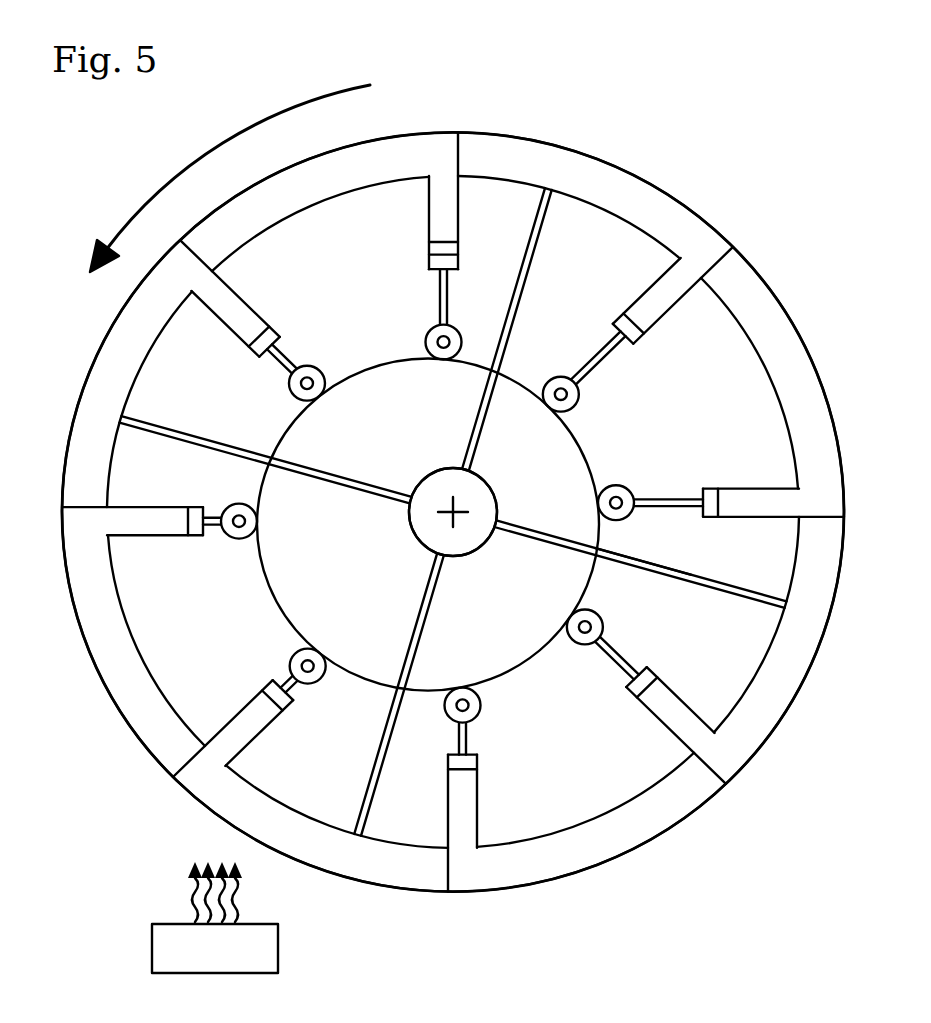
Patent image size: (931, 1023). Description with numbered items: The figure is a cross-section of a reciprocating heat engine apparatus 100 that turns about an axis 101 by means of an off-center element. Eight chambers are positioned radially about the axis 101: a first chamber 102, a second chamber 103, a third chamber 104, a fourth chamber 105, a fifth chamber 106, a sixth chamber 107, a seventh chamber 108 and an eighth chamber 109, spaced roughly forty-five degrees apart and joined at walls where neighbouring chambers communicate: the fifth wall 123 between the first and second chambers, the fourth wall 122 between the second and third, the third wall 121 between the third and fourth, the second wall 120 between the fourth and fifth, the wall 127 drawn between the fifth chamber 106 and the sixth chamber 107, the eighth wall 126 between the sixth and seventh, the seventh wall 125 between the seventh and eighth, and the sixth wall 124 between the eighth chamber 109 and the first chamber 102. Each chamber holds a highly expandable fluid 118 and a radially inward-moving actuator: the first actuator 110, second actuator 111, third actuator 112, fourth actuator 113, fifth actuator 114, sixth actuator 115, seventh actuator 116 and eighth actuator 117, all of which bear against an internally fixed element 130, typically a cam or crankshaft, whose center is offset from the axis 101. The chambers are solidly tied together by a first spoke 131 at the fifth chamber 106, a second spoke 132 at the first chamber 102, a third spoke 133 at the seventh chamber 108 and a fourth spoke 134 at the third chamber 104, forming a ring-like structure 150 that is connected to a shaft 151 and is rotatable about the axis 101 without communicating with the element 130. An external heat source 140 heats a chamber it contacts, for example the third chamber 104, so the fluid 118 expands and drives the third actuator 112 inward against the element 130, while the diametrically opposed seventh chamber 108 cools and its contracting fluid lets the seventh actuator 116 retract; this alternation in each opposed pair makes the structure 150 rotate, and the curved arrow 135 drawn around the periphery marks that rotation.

The reciprocating heat engine apparatus 100 is at (716, 133).
The axis 101 is at (462, 505).
The first chamber 102 is at (772, 644).
The second chamber 103 is at (590, 822).
The third chamber 104 is at (345, 828).
The fourth chamber 105 is at (134, 644).
The fifth chamber 106 is at (142, 362).
The sixth chamber 107 is at (333, 200).
The seventh chamber 108 is at (596, 208).
The eighth chamber 109 is at (788, 430).
The first actuator 110 is at (599, 703).
The second actuator 111 is at (505, 777).
The third actuator 112 is at (228, 687).
The fourth actuator 113 is at (172, 493).
The fifth actuator 114 is at (294, 303).
The sixth actuator 115 is at (484, 255).
The seventh actuator 116 is at (630, 384).
The eighth actuator 117 is at (653, 470).
The fluid 118 is at (290, 191).
The second wall 120 is at (72, 512).
The third wall 121 is at (196, 766).
The fourth wall 122 is at (450, 884).
The fifth wall 123 is at (730, 766).
The sixth wall 124 is at (841, 506).
The seventh wall 125 is at (721, 251).
The eighth wall 126 is at (457, 152).
The gap 127 is at (198, 262).
The fixed element 130 is at (268, 588).
The first spoke 131 is at (190, 432).
The second spoke 132 is at (684, 569).
The third spoke 133 is at (524, 284).
The fourth spoke 134 is at (391, 752).
The rotation direction arrow 135 is at (58, 388).
The heat source 140 is at (278, 957).
The structure 150 is at (659, 584).
The shaft 151 is at (468, 554).